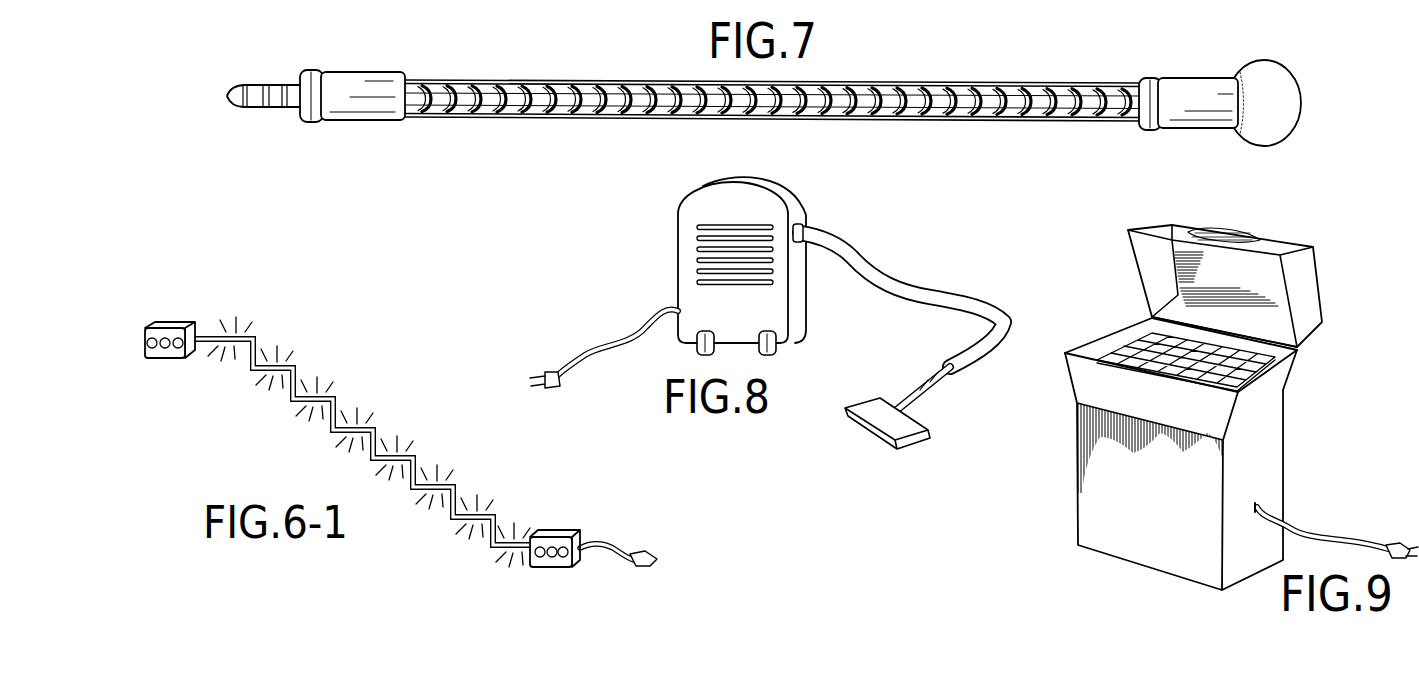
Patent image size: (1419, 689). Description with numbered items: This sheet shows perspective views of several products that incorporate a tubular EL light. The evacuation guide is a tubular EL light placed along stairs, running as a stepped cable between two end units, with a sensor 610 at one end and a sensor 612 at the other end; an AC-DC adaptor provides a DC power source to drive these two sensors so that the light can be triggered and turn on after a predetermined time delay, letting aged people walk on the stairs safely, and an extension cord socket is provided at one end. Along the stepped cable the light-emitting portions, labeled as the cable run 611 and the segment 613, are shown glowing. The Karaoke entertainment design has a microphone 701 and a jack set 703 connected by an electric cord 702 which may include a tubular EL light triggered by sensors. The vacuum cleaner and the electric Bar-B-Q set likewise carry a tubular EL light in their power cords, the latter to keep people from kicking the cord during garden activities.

In FIG. 7, the microphone 701 is at (1181, 77).
In FIG. 7, the electric cord 702 is at (988, 81).
In FIG. 7, the jack set 703 is at (341, 71).
In FIG. 6-1, the sensor 610 is at (552, 530).
In FIG. 6-1, the flexible light cable 611 is at (374, 427).
In FIG. 6-1, the sensor 612 is at (170, 321).
In FIG. 6-1, the light emitting section 613 is at (453, 521).